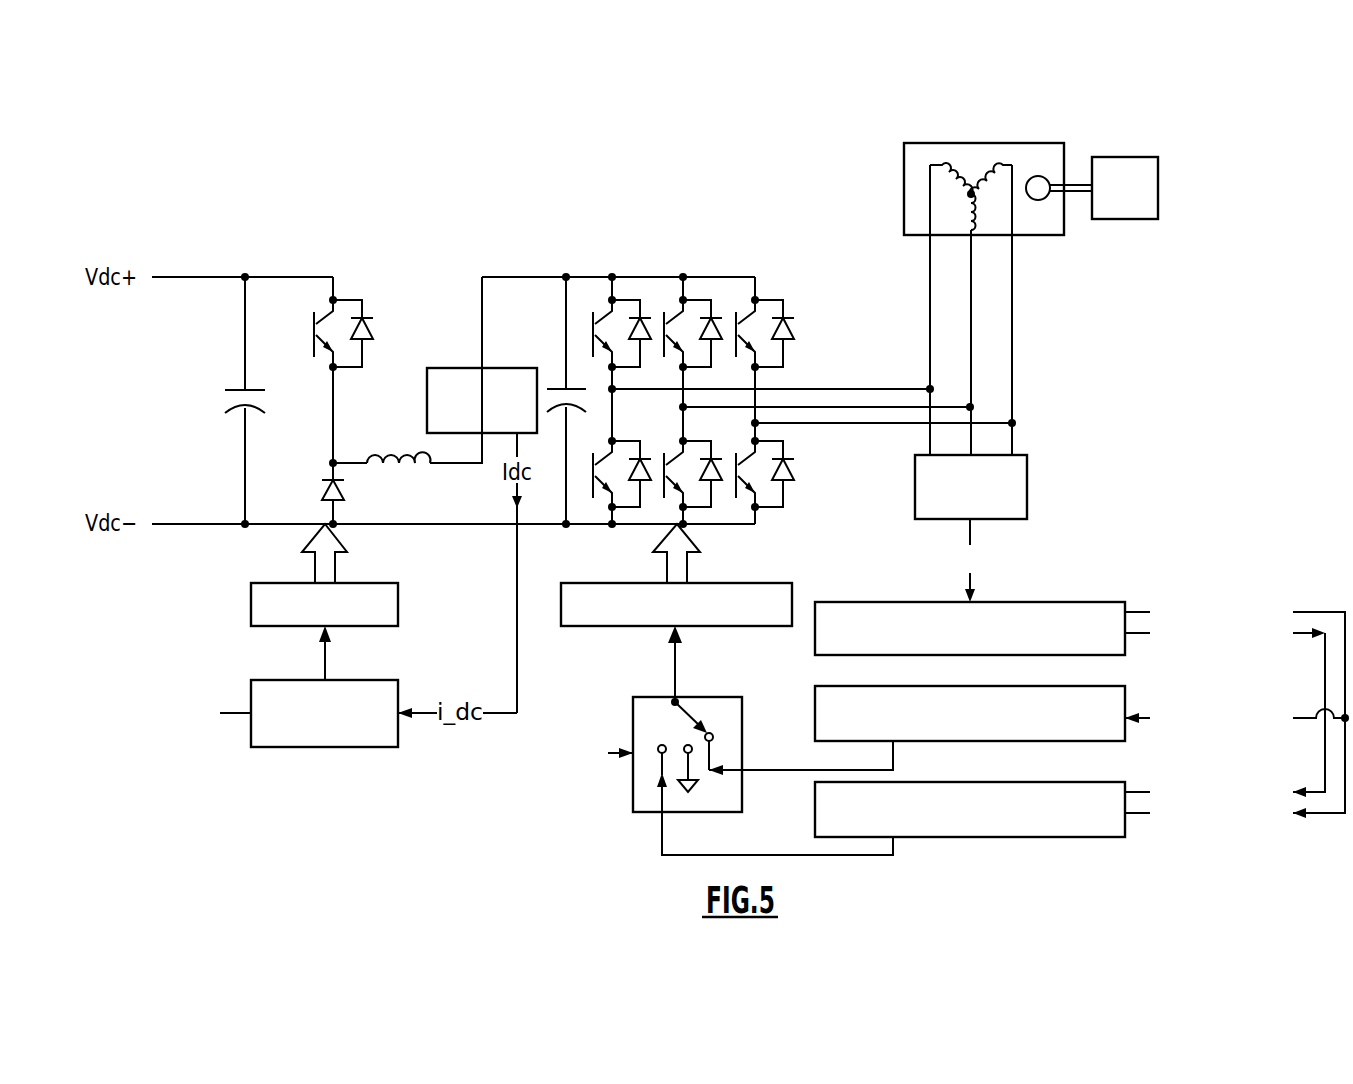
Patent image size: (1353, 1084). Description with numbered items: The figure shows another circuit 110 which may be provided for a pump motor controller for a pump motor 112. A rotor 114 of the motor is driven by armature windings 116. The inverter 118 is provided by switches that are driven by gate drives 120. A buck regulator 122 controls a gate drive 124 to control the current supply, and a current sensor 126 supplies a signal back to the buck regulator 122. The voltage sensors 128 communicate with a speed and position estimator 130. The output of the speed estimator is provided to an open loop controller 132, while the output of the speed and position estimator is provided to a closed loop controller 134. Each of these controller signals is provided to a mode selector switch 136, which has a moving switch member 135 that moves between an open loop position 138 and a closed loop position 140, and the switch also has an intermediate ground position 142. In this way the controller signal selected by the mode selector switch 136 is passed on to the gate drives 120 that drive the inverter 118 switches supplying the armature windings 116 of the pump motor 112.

The circuit 110 is at (609, 196).
The pump motor 112 is at (1154, 173).
The rotor 114 is at (1036, 199).
The armature windings 116 is at (971, 192).
The inverter 118 is at (683, 264).
The gate drives 120 is at (580, 583).
The buck regulator 122 is at (272, 680).
The gate drive 124 is at (272, 583).
The current sensor 126 is at (452, 368).
The voltage sensors 128 is at (1027, 480).
The speed and position estimator 130 is at (897, 602).
The open loop controller 132 is at (828, 686).
The closed loop controller 134 is at (815, 818).
The moving switch member 135 is at (698, 722).
The mode selector switch 136 is at (742, 724).
The open loop position 138 is at (713, 752).
The closed loop position 140 is at (660, 757).
The intermediate ground position 142 is at (695, 768).